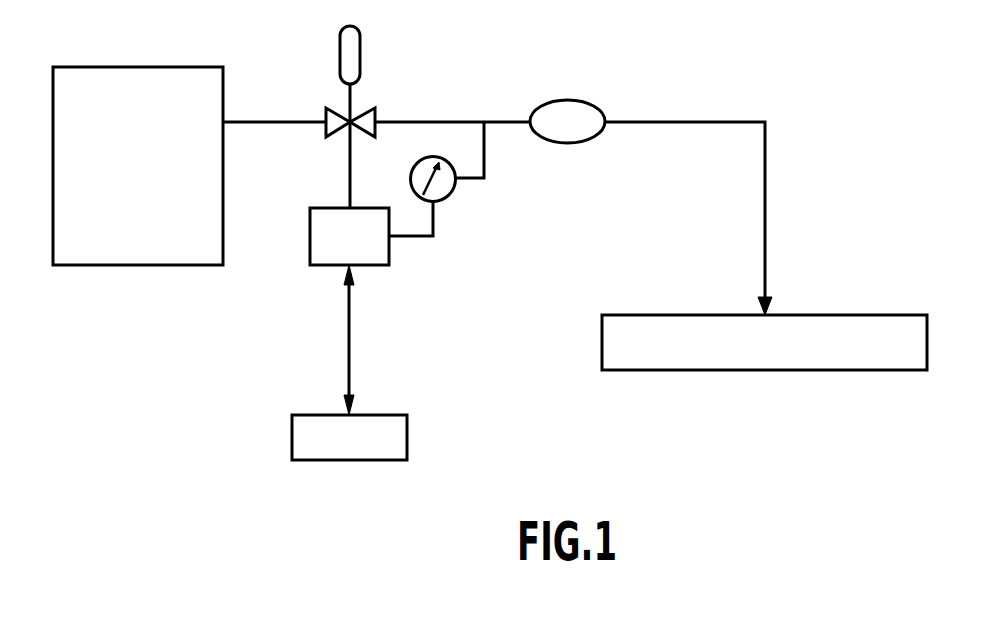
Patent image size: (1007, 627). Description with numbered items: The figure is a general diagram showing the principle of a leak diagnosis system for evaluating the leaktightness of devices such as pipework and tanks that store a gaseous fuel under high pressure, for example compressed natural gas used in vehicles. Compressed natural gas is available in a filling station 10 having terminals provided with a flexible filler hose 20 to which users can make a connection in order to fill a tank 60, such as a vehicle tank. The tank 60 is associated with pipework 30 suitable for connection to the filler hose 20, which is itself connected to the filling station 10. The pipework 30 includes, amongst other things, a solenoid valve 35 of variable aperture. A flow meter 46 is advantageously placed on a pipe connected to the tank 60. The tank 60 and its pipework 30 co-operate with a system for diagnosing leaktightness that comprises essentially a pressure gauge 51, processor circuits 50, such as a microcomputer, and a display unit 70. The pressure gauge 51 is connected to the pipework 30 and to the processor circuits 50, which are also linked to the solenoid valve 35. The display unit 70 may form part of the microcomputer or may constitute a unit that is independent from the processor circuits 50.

The filling station 10 is at (156, 178).
The filler hose 20 is at (287, 123).
The pipework 30 is at (452, 120).
The solenoid valve 35 is at (351, 63).
The flow meter 46 is at (582, 133).
The processor circuits 50 is at (364, 250).
The pressure gauge 51 is at (444, 188).
The tank 60 is at (777, 352).
The display unit 70 is at (335, 448).